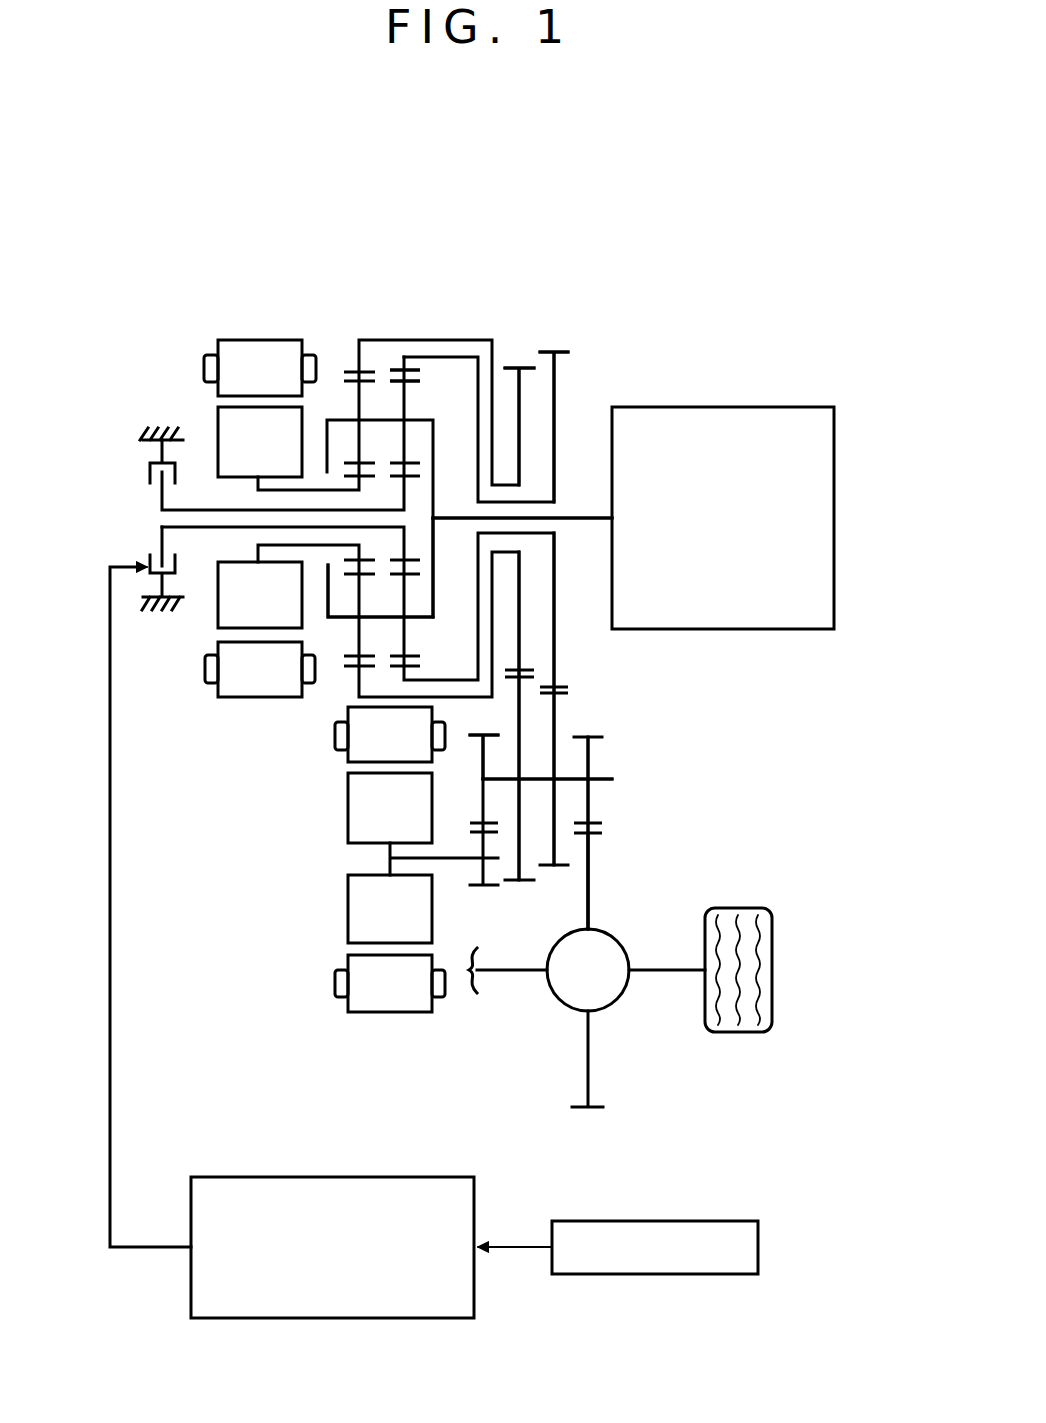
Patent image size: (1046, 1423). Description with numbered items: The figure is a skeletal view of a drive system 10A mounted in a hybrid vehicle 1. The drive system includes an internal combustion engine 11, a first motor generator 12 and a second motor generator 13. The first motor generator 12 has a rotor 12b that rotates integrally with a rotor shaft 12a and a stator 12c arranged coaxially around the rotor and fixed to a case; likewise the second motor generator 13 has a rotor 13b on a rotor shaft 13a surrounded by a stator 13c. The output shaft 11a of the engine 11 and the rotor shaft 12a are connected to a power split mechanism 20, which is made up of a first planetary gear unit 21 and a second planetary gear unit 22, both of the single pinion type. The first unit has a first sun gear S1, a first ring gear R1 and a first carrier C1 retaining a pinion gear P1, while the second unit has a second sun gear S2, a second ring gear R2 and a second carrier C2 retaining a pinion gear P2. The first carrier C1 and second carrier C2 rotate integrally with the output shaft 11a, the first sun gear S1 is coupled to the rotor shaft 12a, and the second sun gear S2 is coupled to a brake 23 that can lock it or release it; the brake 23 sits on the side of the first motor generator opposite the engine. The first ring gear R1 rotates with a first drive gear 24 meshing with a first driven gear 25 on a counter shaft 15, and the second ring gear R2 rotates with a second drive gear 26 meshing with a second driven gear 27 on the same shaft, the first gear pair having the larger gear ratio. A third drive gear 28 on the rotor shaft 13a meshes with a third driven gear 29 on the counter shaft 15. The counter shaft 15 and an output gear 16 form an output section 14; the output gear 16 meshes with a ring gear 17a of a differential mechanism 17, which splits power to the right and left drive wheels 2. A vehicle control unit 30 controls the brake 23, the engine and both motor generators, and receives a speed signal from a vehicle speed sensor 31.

The hybrid vehicle 1 is at (681, 200).
The drive wheels 2 is at (743, 1033).
The drive system 10A is at (313, 186).
The internal combustion engine 11 is at (758, 405).
The output shaft 11a is at (584, 514).
The first motor generator 12 is at (226, 285).
The rotor shaft 12a is at (312, 488).
The rotor 12b is at (214, 606).
The stator 12c is at (235, 698).
The second motor generator 13 is at (392, 1037).
The rotor shaft 13a is at (450, 862).
The rotor 13b is at (348, 912).
The stator 13c is at (362, 1014).
The output section 14 is at (725, 779).
The counter shaft 15 is at (600, 778).
The output gear 16 is at (590, 803).
The differential mechanism 17 is at (618, 996).
The ring gear 17a is at (590, 876).
The power split mechanism 20 is at (437, 261).
The first planetary gear unit 21 is at (372, 286).
The second planetary gear unit 22 is at (449, 387).
The brake 23 is at (160, 389).
The first drive gear 24 is at (513, 365).
The first driven gear 25 is at (520, 742).
The second drive gear 26 is at (561, 346).
The second driven gear 27 is at (555, 710).
The third drive gear 28 is at (489, 888).
The third driven gear 29 is at (481, 770).
The vehicle control unit 30 is at (250, 1176).
The vehicle speed sensor 31 is at (650, 1220).
The pinion gear P1 is at (362, 383).
The pinion gear P2 is at (406, 407).
The first sun gear S1 is at (368, 477).
The second sun gear S2 is at (407, 493).
The first carrier C1 is at (345, 618).
The second carrier C2 is at (428, 614).
The first ring gear R1 is at (354, 698).
The second ring gear R2 is at (395, 369).